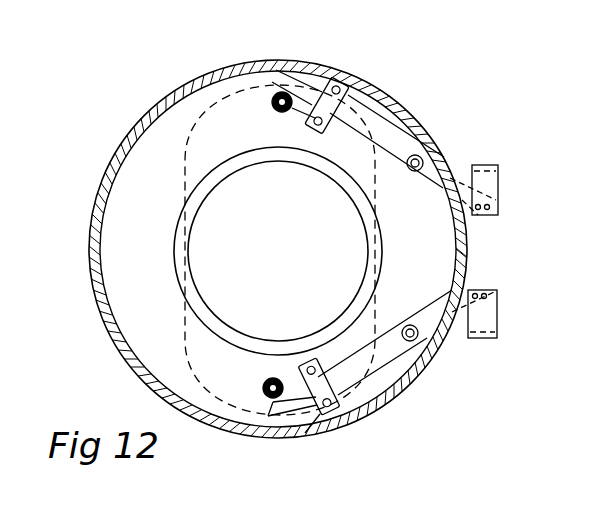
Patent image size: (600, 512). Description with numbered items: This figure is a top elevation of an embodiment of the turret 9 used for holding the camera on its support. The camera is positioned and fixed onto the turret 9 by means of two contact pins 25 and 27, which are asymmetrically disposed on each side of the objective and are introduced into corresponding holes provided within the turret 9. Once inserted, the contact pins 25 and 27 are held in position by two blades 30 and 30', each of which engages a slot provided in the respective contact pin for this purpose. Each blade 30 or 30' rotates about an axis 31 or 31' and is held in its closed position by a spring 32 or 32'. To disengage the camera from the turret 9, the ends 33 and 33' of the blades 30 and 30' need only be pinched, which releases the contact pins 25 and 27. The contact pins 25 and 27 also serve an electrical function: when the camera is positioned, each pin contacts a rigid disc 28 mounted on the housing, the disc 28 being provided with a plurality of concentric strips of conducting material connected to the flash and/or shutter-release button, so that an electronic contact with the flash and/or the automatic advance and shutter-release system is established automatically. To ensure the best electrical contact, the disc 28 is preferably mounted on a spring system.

The turret 9 is at (148, 157).
The contact pin 25 is at (275, 94).
The contact pin 27 is at (263, 402).
The rigid disc 28 is at (218, 130).
The blade 30 is at (387, 129).
The blade 30' is at (385, 356).
The axis 31 is at (436, 148).
The axis 31' is at (435, 351).
The spring 32 is at (327, 84).
The spring 32' is at (314, 415).
The end of blade 33 is at (493, 190).
The end of blade 33' is at (497, 314).